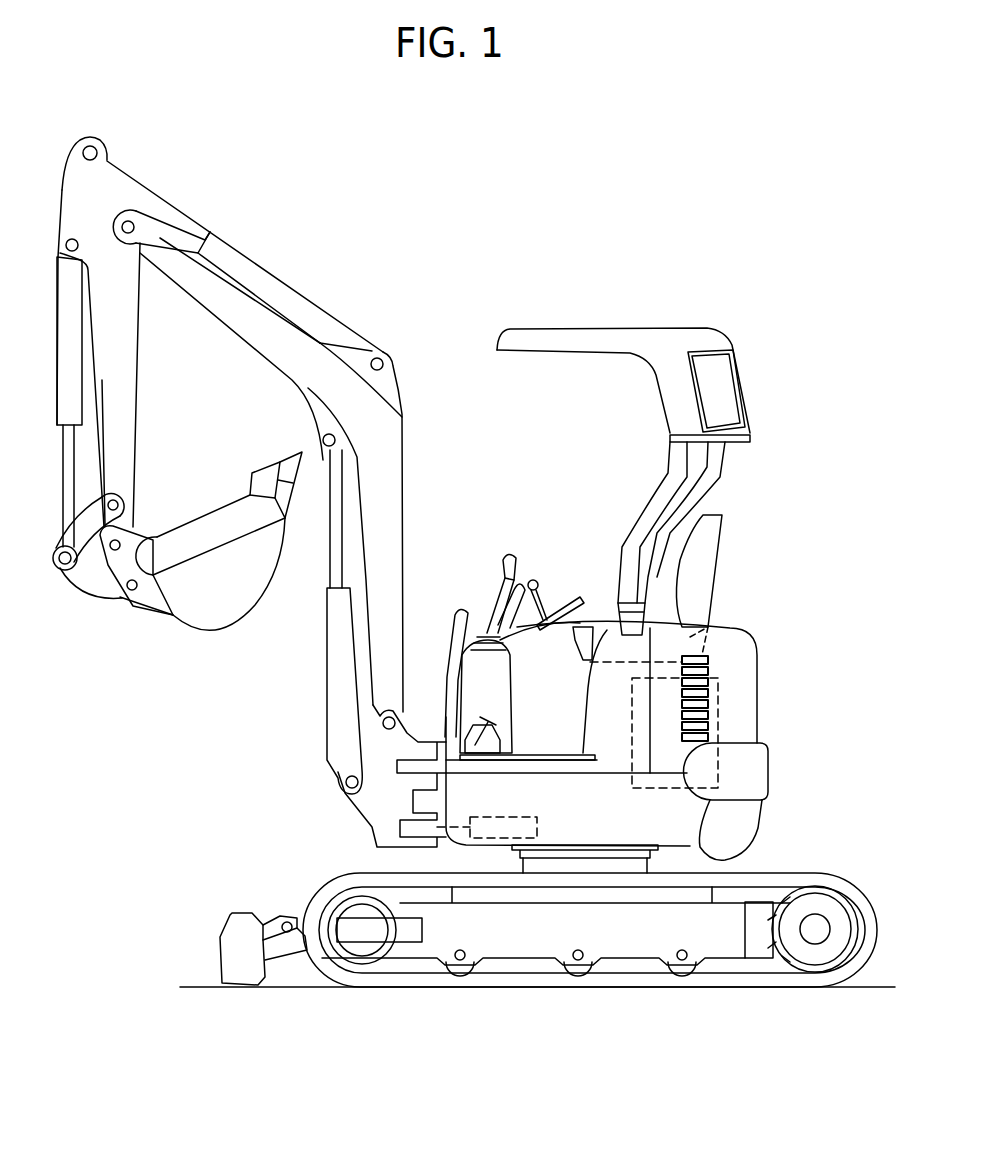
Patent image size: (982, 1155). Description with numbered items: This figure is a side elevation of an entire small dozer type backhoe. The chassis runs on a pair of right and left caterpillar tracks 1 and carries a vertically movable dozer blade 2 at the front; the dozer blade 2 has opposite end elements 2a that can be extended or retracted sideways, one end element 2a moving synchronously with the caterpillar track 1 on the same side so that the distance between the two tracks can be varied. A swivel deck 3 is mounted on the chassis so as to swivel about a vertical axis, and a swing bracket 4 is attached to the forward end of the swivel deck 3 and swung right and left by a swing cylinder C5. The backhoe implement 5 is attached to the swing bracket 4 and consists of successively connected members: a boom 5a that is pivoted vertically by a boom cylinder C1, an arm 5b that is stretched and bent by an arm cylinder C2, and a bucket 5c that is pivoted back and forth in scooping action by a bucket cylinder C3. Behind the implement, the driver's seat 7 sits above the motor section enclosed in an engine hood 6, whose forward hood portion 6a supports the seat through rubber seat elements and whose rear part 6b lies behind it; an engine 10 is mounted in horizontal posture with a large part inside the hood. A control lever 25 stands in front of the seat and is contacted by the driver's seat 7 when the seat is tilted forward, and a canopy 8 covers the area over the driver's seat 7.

The caterpillar tracks 1 is at (331, 883).
The dozer blade 2 is at (232, 916).
The end elements 2a is at (224, 949).
The swivel deck 3 is at (683, 833).
The swing bracket 4 is at (365, 810).
The backhoe implement 5 is at (312, 252).
The boom 5a is at (390, 447).
The arm 5b is at (117, 366).
The bucket 5c is at (220, 527).
The engine hood 6 is at (742, 627).
The forward hood portion 6a is at (590, 688).
The rear portion of body 6b is at (747, 688).
The driver's seat 7 is at (594, 640).
The canopy 8 is at (597, 333).
The engine 10 is at (632, 716).
The control lever 25 is at (511, 560).
The boom cylinder C1 is at (345, 713).
The arm cylinder C2 is at (322, 314).
The bucket cylinder C3 is at (72, 400).
The swing cylinder C5 is at (527, 815).